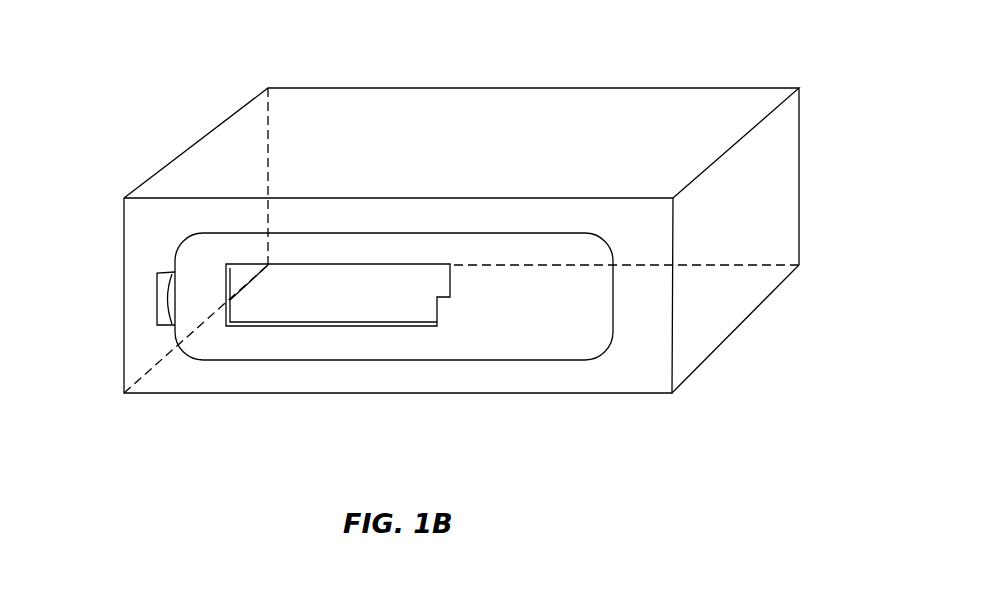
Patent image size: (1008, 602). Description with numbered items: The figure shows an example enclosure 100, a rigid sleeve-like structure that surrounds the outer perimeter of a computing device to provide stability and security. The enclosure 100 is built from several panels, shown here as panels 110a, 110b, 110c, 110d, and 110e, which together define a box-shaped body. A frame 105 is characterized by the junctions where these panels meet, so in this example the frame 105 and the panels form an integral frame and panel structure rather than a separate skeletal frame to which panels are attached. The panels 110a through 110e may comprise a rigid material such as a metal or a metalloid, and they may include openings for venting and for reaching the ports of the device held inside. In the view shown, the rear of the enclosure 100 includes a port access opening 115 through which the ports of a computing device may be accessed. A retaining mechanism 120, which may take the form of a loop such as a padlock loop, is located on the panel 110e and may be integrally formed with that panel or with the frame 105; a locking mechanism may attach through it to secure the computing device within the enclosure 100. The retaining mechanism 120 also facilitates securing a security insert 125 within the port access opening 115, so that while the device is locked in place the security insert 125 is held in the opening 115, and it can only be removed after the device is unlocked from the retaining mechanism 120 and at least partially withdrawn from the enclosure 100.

The enclosure 100 is at (131, 52).
The frame 105 is at (152, 175).
The panel 110a is at (624, 240).
The panel 110b is at (461, 143).
The panel 110c is at (338, 295).
The panel 110d is at (196, 240).
The panel 110e is at (607, 385).
The port access opening 115 is at (249, 345).
The retaining mechanism 120 is at (157, 311).
The security insert 125 is at (394, 296).